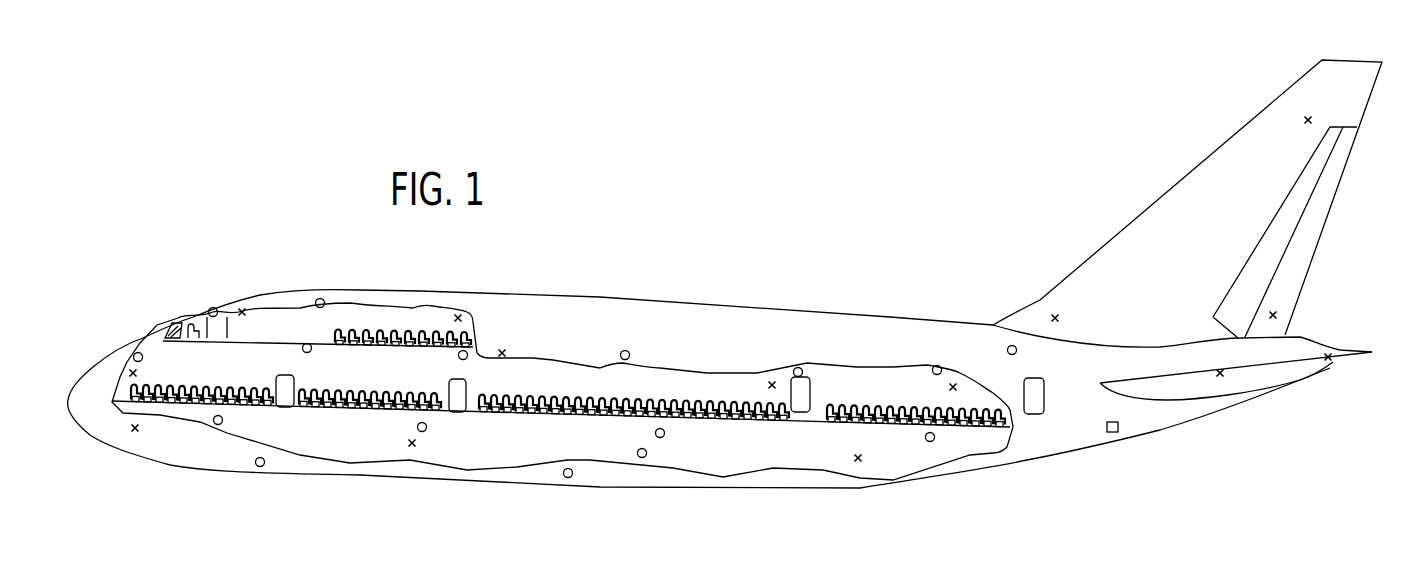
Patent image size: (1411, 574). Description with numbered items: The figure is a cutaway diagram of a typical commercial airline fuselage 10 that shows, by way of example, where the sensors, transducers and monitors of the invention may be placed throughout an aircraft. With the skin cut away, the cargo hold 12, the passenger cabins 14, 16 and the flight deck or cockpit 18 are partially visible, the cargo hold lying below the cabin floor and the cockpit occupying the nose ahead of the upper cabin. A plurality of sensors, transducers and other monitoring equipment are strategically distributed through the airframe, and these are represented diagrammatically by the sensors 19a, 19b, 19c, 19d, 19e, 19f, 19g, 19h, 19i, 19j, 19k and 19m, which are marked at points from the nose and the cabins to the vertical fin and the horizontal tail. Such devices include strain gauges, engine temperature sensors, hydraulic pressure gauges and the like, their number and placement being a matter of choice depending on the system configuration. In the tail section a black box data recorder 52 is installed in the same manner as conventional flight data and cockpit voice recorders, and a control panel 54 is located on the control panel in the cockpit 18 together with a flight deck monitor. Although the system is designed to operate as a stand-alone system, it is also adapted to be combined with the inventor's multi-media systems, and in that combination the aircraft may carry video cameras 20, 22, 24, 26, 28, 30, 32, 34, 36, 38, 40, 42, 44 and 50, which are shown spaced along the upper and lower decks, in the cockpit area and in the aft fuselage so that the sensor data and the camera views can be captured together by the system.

The fuselage 10 is at (723, 273).
The cargo hold 12 is at (488, 447).
The passenger cabin 14 is at (693, 385).
The passenger cabin 16 is at (417, 323).
The flight deck or cockpit 18 is at (198, 301).
The sensor 19a is at (1059, 317).
The sensor 19b is at (1305, 119).
The sensor 19c is at (1277, 314).
The sensor 19d is at (1332, 360).
The sensor 19e is at (1222, 377).
The sensor 19f is at (954, 383).
The sensor 19g is at (504, 349).
The sensor 19h is at (461, 314).
The sensor 19i is at (244, 308).
The sensor 19j is at (131, 377).
The sensor 19k is at (858, 462).
The sensor 19m is at (138, 431).
The video camera 20 is at (257, 466).
The video camera 22 is at (567, 478).
The video camera 24 is at (642, 458).
The video camera 26 is at (1012, 345).
The video camera 28 is at (322, 299).
The video camera 30 is at (143, 357).
The video camera 32 is at (309, 352).
The video camera 34 is at (458, 356).
The video camera 36 is at (629, 352).
The video camera 38 is at (799, 367).
The video camera 40 is at (933, 372).
The video camera 42 is at (223, 421).
The video camera 44 is at (417, 427).
The video camera 50 is at (655, 433).
The black box data recorder 52 is at (925, 437).
The control panel 54 is at (176, 333).